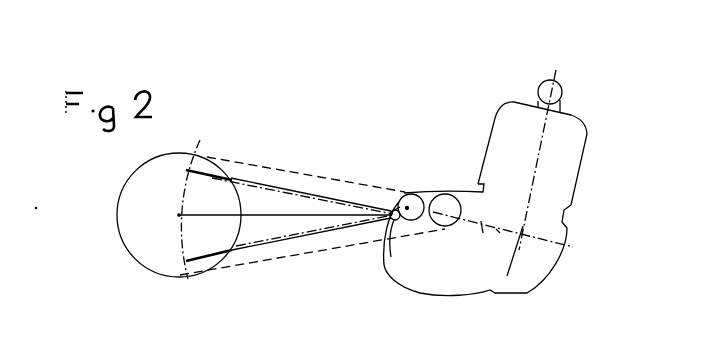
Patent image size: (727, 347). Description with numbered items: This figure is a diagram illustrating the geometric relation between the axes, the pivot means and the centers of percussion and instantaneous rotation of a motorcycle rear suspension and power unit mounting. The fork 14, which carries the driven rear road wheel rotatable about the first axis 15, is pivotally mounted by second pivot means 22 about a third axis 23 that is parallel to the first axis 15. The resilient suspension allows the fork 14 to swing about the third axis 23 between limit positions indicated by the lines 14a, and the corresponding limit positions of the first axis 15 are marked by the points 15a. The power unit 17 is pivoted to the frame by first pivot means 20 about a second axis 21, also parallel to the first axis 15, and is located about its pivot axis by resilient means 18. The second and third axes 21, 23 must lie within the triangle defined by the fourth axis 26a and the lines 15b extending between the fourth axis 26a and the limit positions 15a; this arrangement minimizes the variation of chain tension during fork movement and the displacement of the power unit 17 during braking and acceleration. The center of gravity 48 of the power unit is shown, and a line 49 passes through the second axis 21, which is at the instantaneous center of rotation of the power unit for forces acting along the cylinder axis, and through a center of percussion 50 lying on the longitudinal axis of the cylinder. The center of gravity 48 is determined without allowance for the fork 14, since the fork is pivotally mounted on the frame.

The fork 14 is at (270, 217).
The lines indicating limit positions of the fork 14a is at (273, 188).
The first axis 15 is at (179, 215).
The points indicating limit positions of the first axis 15a is at (186, 170).
The lines extending between the fourth axis and the limit positions of the first axi 15b is at (323, 182).
The power unit 17 is at (577, 196).
The resilient means 18 is at (559, 93).
The first pivot means 20 is at (407, 208).
The second axis 21 is at (418, 194).
The second pivot means 22 is at (400, 207).
The third axis 23 is at (386, 264).
The fourth axis 26a is at (448, 210).
The center of gravity of the power unit 48 is at (482, 222).
The line 49 is at (497, 225).
The center of percussion 50 is at (524, 255).